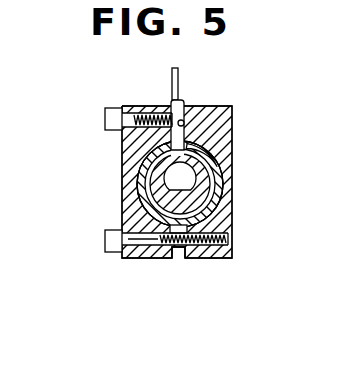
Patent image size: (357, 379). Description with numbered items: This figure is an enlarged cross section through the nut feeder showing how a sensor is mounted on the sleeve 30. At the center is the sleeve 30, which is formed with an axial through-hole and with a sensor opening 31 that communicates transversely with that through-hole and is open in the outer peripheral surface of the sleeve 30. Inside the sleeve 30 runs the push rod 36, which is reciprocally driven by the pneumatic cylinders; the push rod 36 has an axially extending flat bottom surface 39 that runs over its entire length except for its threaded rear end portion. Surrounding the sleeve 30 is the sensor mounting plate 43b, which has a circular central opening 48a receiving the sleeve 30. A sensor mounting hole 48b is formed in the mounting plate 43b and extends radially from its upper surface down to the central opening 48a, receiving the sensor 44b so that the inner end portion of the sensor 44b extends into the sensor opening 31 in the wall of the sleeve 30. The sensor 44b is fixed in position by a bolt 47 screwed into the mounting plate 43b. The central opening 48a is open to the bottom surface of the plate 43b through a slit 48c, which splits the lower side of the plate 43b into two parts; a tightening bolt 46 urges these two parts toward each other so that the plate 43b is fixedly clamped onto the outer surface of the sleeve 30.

The sleeve 30 is at (137, 190).
The sensor opening 31 is at (153, 148).
The push rod 36 is at (167, 178).
The flat bottom surface 39 is at (173, 205).
The sensor mounting plate 43b is at (226, 147).
The sensor 44b is at (185, 99).
The tightening bolt 46 is at (104, 240).
The bolt 47 is at (105, 122).
The central opening 48a is at (213, 198).
The sensor mounting hole 48b is at (185, 123).
The slit 48c is at (180, 258).